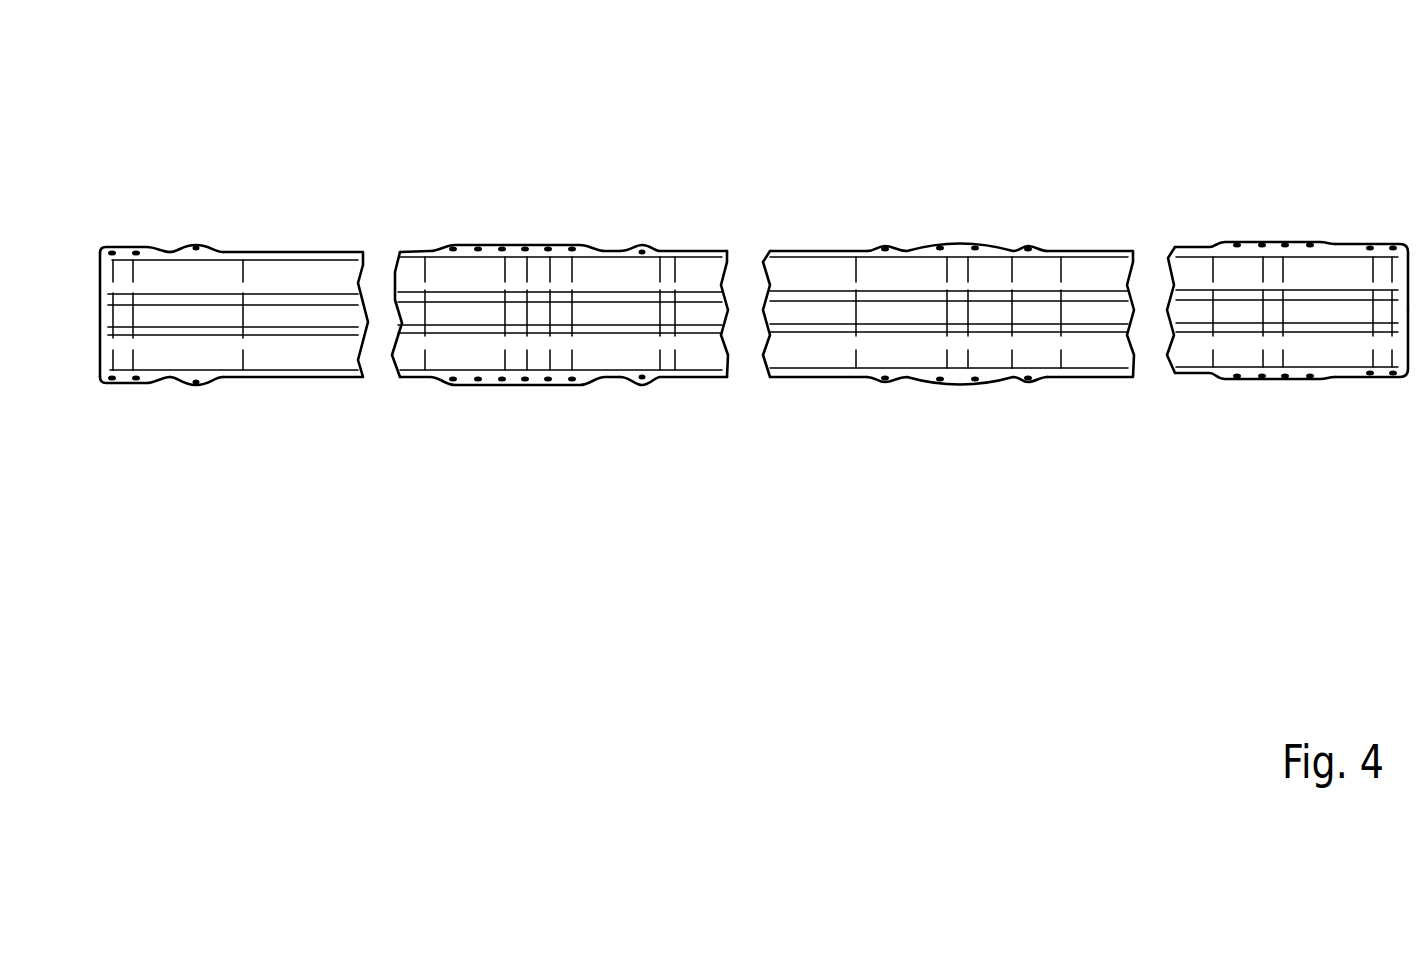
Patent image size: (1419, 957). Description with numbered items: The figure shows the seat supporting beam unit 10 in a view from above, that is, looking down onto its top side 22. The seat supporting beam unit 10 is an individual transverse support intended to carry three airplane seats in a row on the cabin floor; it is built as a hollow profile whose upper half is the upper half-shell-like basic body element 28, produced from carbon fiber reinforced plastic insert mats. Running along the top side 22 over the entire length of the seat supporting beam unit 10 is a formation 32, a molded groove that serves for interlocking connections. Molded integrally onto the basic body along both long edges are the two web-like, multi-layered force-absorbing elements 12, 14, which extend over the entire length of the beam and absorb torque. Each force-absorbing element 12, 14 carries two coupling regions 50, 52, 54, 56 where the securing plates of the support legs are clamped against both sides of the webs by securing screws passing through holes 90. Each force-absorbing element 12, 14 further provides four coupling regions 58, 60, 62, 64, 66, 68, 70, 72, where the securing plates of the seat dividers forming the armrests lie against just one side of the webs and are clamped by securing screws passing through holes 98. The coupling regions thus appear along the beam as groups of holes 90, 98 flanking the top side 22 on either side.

The seat supporting beam unit 10 is at (826, 228).
The force-absorbing element 12 is at (103, 235).
The force-absorbing element 14 is at (101, 405).
The top side 22 is at (284, 340).
The upper half-shell-like basic body element 28 is at (1091, 258).
The formation 32 is at (352, 317).
The coupling region 50 is at (536, 377).
The coupling region 52 is at (1277, 373).
The coupling region 54 is at (537, 253).
The coupling region 56 is at (1273, 247).
The coupling region 58 is at (168, 379).
The coupling region 60 is at (614, 378).
The coupling region 62 is at (954, 377).
The coupling region 64 is at (1382, 374).
The coupling region 66 is at (170, 250).
The coupling region 68 is at (615, 252).
The coupling region 70 is at (953, 248).
The coupling region 72 is at (1385, 246).
The holes 90 is at (502, 378).
The holes 98 is at (197, 386).